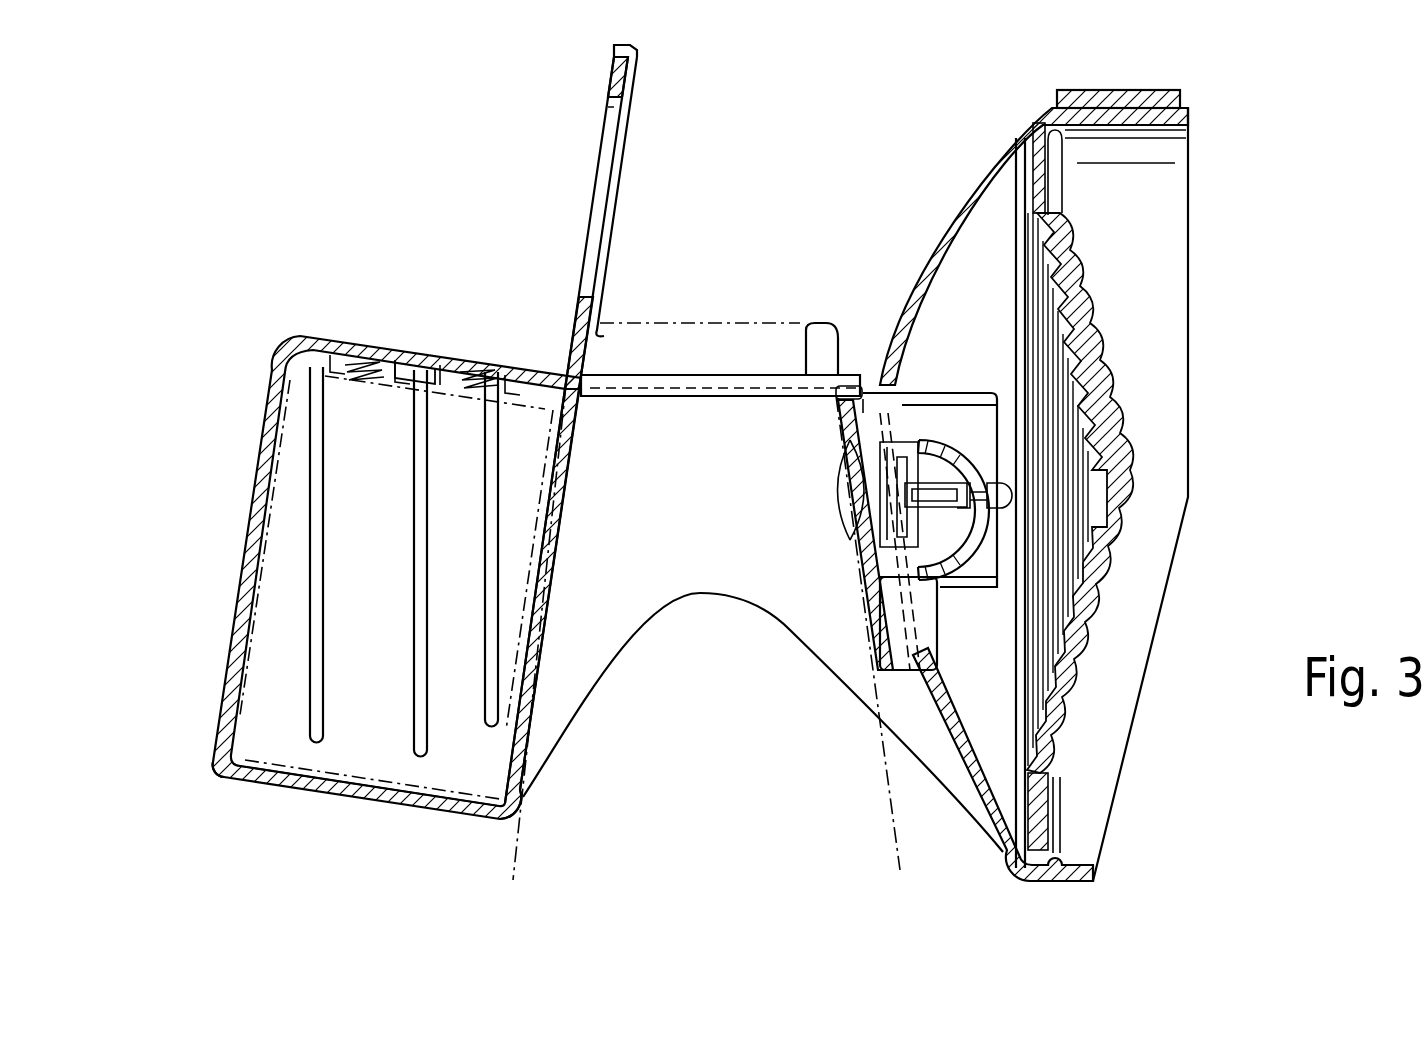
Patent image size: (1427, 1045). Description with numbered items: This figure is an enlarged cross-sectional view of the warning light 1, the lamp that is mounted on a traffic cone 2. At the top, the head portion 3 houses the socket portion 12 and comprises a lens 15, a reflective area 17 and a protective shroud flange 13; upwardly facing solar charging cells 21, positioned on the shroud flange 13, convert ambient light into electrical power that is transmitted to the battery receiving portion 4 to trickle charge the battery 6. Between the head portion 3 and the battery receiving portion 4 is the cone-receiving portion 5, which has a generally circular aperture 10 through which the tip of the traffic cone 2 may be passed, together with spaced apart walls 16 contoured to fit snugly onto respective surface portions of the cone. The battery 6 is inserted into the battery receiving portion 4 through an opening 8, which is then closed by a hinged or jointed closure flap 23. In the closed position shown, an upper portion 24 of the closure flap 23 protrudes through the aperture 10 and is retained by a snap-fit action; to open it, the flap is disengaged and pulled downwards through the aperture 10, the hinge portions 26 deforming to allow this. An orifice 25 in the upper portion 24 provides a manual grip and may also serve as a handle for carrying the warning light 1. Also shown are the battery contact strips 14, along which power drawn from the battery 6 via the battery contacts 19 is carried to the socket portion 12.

The warning light 1 is at (420, 182).
The traffic cone 2 is at (877, 753).
The head portion 3 is at (1247, 157).
The battery receiving portion 4 is at (228, 655).
The cone-receiving portion 5 is at (744, 286).
The battery 6 is at (293, 338).
The opening 8 is at (527, 725).
The aperture 10 is at (806, 352).
The socket portion 12 is at (982, 605).
The protective shroud flange 13 is at (1189, 297).
The battery contact strips 14 is at (397, 360).
The lens 15 is at (1120, 360).
The spaced apart walls 16 is at (763, 587).
The reflective area 17 is at (1046, 203).
The battery contacts 19 is at (362, 365).
The solar charging cells 21 is at (1118, 97).
The closure flap 23 is at (355, 797).
The upper portion of the closure flap 24 is at (612, 57).
The orifice 25 is at (588, 175).
The hinge portions 26 is at (216, 778).